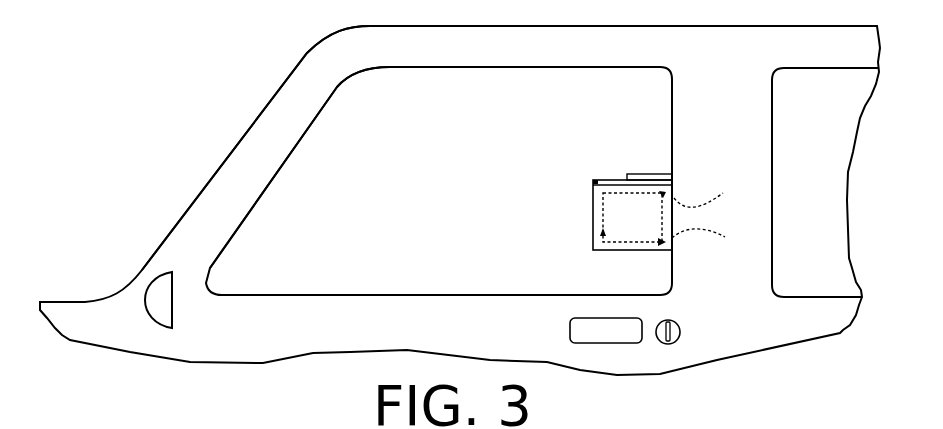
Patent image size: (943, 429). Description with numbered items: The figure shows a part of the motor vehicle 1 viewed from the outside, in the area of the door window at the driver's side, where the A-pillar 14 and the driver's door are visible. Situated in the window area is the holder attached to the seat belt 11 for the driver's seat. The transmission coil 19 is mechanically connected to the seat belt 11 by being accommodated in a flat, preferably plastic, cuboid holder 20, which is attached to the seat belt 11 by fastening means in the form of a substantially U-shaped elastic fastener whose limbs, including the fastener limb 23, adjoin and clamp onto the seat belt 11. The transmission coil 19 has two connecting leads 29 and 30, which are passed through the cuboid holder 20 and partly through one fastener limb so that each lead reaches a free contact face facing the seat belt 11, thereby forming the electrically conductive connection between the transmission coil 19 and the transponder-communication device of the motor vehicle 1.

The motor vehicle 1 is at (158, 106).
The A-pillar 14 is at (305, 97).
The seat belt 11 is at (625, 191).
The cuboid holder 20 is at (594, 181).
The fastener limb 23 is at (648, 175).
The transmission coil 19 is at (603, 233).
The connecting lead 29 is at (707, 191).
The connecting lead 30 is at (704, 247).